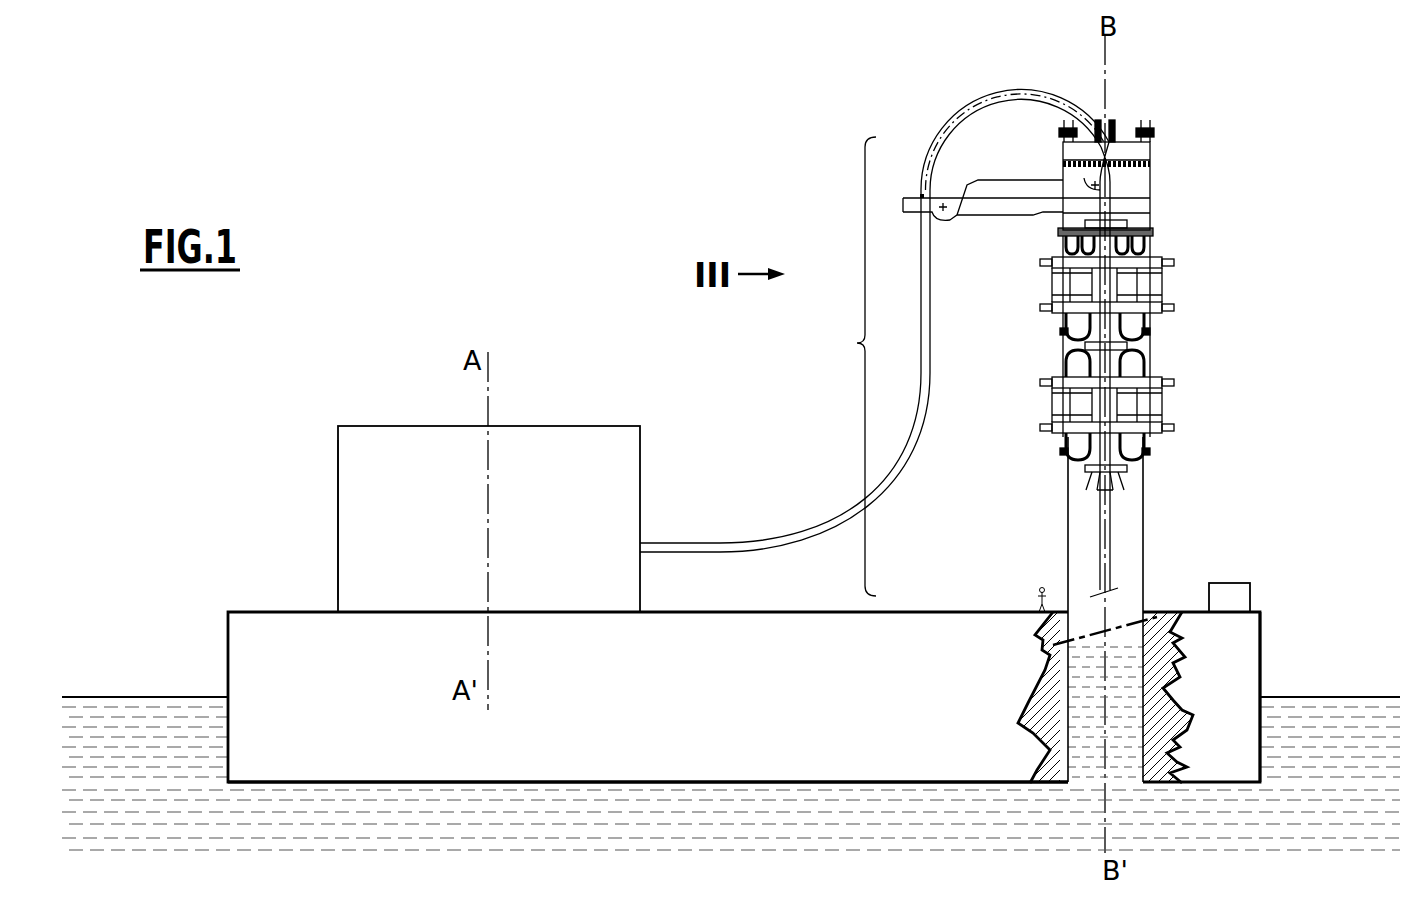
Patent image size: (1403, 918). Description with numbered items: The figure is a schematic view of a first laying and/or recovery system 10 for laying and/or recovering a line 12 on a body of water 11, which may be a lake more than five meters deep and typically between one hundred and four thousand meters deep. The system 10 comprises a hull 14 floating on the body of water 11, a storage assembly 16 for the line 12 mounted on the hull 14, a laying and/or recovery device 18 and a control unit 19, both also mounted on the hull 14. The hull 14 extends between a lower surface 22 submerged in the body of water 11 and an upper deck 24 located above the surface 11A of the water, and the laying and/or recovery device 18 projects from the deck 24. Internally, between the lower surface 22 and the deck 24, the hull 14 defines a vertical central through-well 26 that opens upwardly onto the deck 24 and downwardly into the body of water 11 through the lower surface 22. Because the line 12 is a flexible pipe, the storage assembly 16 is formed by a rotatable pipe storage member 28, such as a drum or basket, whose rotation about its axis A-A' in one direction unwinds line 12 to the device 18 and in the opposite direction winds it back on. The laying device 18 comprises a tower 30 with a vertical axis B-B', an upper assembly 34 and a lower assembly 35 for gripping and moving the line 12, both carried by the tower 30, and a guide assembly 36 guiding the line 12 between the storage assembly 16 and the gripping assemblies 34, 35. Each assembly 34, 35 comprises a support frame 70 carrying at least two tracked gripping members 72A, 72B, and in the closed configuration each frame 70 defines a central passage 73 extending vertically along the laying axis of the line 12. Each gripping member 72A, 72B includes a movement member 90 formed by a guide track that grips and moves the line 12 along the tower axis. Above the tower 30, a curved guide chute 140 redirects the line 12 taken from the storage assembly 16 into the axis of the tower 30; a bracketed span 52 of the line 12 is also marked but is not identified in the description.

The laying and/or recovery system 10 is at (430, 133).
The body of water 11 is at (153, 765).
The surface of the body of water 11A is at (100, 697).
The line 12 is at (752, 520).
The hull 14 is at (1235, 668).
The storage assembly 16 is at (386, 411).
The laying and/or recovery device 18 is at (1268, 257).
The control unit 19 is at (1245, 583).
The lower surface 22 is at (715, 783).
The upper deck 24 is at (802, 612).
The central through-well 26 is at (1090, 748).
The rotatable pipe storage member 28 is at (338, 496).
The tower 30 is at (1144, 556).
The upper assembly for gripping and moving the line 34 is at (1153, 234).
The lower assembly for gripping and moving the line 35 is at (1158, 378).
The guide assembly 36 is at (920, 112).
The hose section 52 is at (852, 366).
The support frame 70 is at (1052, 272).
The tracked gripping member 72A is at (1150, 240).
The tracked gripping member 72B is at (1150, 452).
The central passage 73 is at (1118, 228).
The movement member 90 is at (1128, 456).
The curved guide chute 140 is at (985, 93).